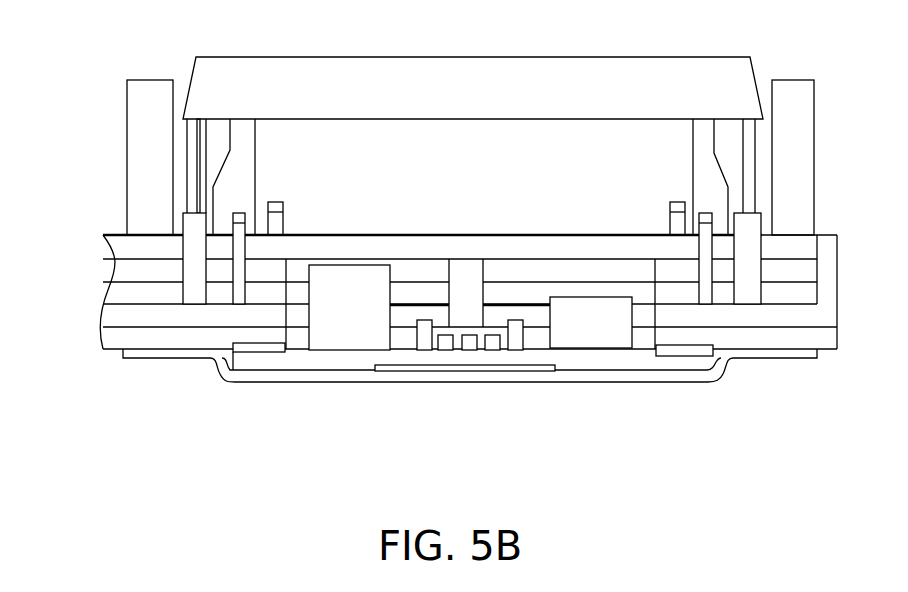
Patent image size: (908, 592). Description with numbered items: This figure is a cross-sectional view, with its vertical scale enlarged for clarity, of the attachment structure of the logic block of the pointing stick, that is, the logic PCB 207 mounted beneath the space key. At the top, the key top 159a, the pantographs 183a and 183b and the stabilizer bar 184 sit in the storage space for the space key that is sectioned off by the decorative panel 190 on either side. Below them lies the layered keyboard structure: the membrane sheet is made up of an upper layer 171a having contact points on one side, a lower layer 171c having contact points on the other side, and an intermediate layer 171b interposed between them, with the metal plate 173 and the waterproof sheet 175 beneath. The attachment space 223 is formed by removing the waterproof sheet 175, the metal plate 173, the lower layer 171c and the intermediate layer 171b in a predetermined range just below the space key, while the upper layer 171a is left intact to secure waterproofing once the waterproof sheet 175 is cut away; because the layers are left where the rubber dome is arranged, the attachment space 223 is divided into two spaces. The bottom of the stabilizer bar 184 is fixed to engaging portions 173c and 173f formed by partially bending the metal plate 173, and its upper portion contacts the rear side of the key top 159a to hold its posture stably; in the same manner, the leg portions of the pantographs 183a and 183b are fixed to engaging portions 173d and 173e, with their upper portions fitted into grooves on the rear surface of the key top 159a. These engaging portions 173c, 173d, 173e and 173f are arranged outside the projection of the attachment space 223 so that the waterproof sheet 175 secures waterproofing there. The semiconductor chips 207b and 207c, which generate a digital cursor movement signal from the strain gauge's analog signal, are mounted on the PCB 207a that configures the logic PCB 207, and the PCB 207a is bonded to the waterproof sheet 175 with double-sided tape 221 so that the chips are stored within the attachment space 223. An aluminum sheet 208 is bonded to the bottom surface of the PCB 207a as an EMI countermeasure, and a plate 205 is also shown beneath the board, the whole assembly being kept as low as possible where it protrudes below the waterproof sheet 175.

The key top 159a is at (450, 56).
The decorative panel 190 is at (151, 79).
The pantograph 183a is at (570, 143).
The pantograph 183b is at (240, 140).
The stabilizer bar 184 is at (196, 140).
The upper layer 171a is at (123, 248).
The intermediate layer 171b is at (125, 270).
The lower layer 171c is at (118, 293).
The metal plate 173 is at (115, 317).
The waterproof sheet 175 is at (117, 341).
The engaging portion 173c is at (182, 228).
The engaging portion 173d is at (247, 250).
The engaging portion 173e is at (700, 250).
The engaging portion 173f is at (763, 217).
The logic PCB 207 is at (313, 396).
The PCB 207a is at (349, 360).
The semiconductor chip 207b is at (349, 307).
The semiconductor chip 207c is at (591, 322).
The attachment space 223 is at (470, 293).
The heat dissipation plate 205 is at (473, 378).
The aluminum sheet 208 is at (602, 382).
The double-sided tape 221 is at (253, 353).